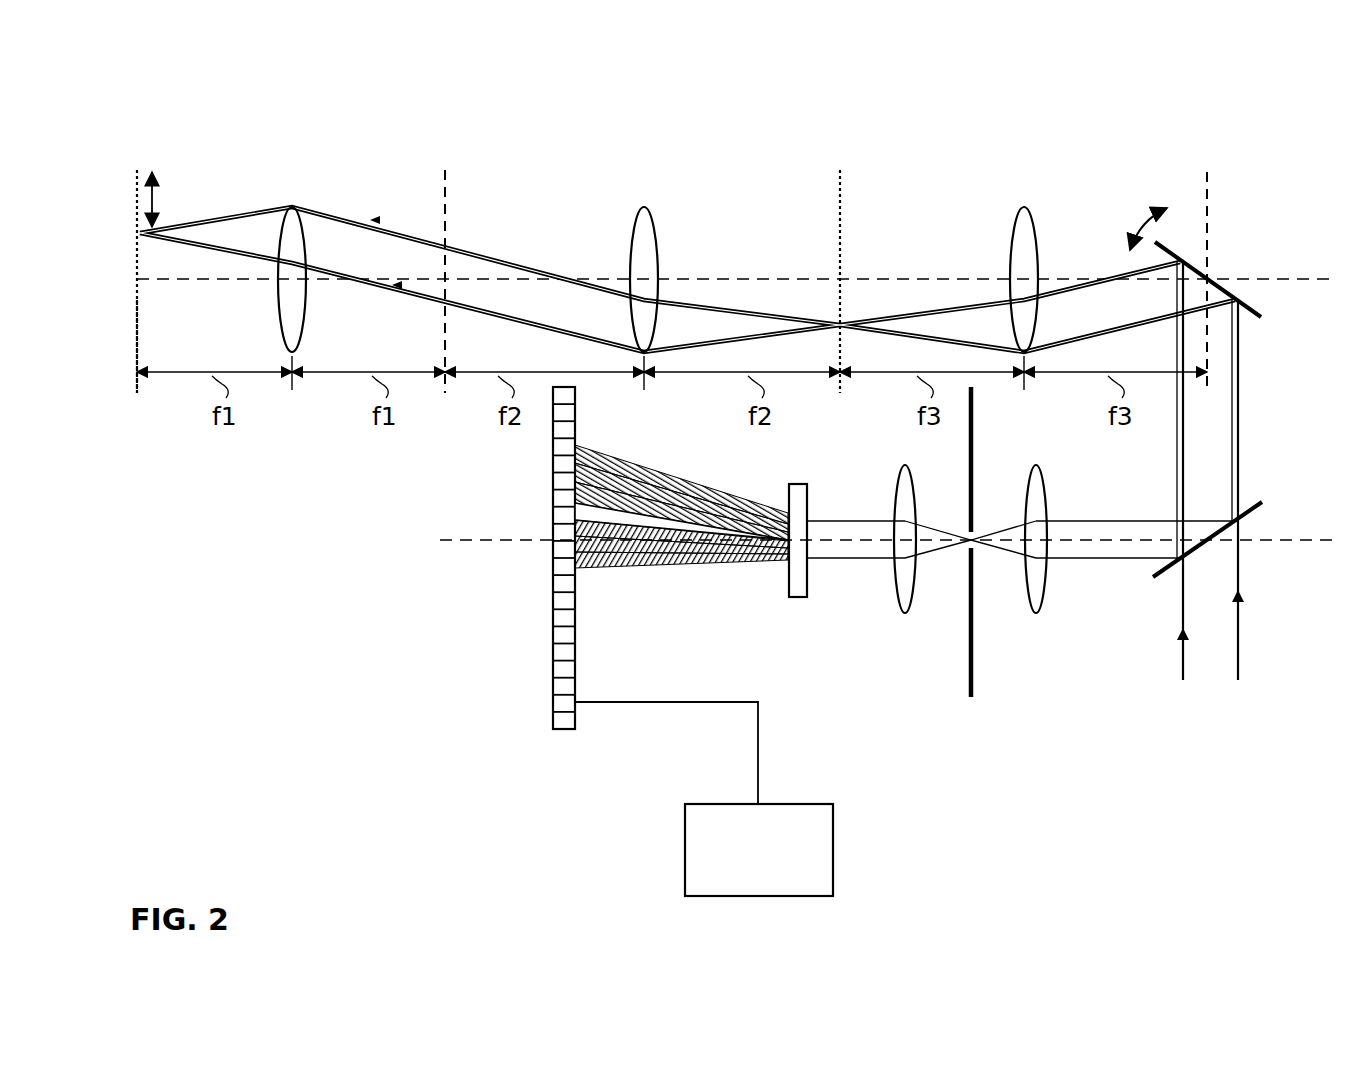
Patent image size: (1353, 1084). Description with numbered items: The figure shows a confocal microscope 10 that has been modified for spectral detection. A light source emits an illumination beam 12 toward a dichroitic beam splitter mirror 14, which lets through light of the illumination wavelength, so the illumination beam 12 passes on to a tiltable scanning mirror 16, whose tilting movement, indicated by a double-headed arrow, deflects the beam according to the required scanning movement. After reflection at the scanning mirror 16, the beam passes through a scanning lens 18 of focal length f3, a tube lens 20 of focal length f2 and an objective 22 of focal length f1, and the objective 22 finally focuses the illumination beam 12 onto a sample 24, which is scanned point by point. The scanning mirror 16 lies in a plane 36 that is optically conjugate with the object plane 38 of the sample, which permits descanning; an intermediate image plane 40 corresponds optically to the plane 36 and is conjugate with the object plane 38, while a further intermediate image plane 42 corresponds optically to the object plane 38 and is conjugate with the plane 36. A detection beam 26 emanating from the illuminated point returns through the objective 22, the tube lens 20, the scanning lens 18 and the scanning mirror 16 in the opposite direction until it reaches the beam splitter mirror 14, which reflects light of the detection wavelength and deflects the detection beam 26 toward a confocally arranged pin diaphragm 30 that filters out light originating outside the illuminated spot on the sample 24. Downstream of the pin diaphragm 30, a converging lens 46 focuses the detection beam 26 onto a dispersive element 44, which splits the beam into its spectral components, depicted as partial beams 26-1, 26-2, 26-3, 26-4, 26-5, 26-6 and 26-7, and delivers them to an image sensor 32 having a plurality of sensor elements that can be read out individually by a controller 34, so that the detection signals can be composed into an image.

The confocal microscope 10 is at (1118, 152).
The illumination beam 12 is at (1242, 658).
The dichroitic beam splitter mirror 14 is at (1248, 500).
The scanning mirror 16 is at (1260, 306).
The scanning lens 18 is at (1025, 204).
The tube lens 20 is at (645, 206).
The objective 22 is at (293, 206).
The sample 24 is at (135, 260).
The detection beam 26 is at (1100, 560).
The partial beam 26-1 is at (580, 456).
The partial beam 26-2 is at (638, 486).
The partial beam 26-3 is at (686, 514).
The partial beam 26-4 is at (588, 506).
The partial beam 26-5 is at (640, 530).
The partial beam 26-6 is at (680, 542).
The partial beam 26-7 is at (732, 558).
The pin diaphragm 30 is at (973, 670).
The image sensor 32 is at (552, 694).
The controller 34 is at (685, 853).
The plane 36 is at (1211, 190).
The object plane 38 is at (135, 346).
The intermediate image plane 40 is at (448, 188).
The intermediate image plane 42 is at (846, 188).
The dispersive element 44 is at (808, 582).
The converging lens 46 is at (898, 479).